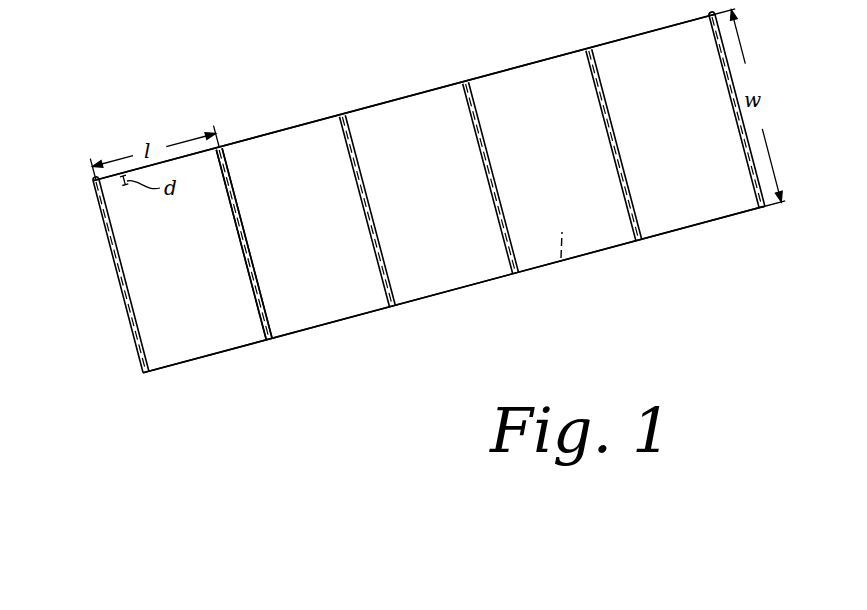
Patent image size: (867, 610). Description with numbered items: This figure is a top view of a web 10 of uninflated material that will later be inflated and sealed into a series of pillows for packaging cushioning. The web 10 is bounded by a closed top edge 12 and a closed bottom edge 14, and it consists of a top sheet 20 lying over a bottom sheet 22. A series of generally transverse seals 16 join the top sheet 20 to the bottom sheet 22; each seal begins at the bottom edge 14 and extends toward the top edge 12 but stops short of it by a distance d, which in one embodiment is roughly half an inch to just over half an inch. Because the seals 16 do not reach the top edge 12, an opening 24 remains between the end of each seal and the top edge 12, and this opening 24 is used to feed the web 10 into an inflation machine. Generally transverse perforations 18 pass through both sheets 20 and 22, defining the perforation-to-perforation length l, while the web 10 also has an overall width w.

The web 10 is at (660, 299).
The top edge 12 is at (415, 97).
The bottom edge 14 is at (312, 331).
The transverse seals 16 is at (267, 336).
The transverse perforations 18 is at (222, 150).
The top sheet 20 is at (548, 78).
The bottom sheet 22 is at (561, 262).
The opening 24 is at (86, 190).